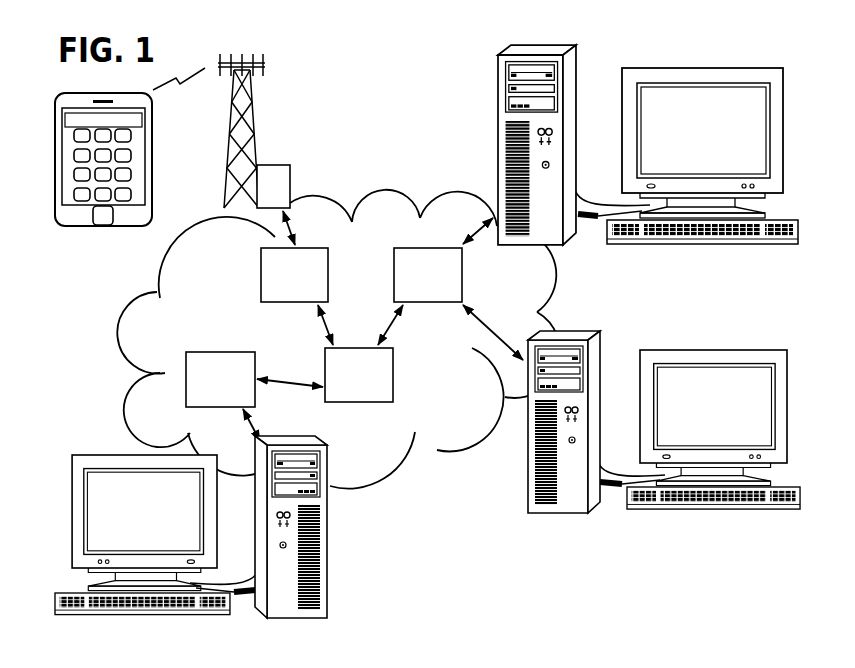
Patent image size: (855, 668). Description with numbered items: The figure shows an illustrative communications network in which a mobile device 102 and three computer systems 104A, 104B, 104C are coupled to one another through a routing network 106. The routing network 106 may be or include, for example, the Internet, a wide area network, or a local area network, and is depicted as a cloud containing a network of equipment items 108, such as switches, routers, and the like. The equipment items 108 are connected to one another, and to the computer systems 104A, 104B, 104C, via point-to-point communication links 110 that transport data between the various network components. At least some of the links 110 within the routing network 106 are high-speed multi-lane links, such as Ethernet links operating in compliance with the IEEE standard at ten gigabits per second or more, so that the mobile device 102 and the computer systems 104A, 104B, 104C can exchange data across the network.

The mobile device 102 is at (103, 174).
The computer system 104A is at (574, 93).
The computer system 104B is at (599, 373).
The computer system 104C is at (329, 580).
The routing network 106 is at (452, 402).
The equipment item 108 is at (310, 248).
The point-to-point communication link 110 is at (480, 322).